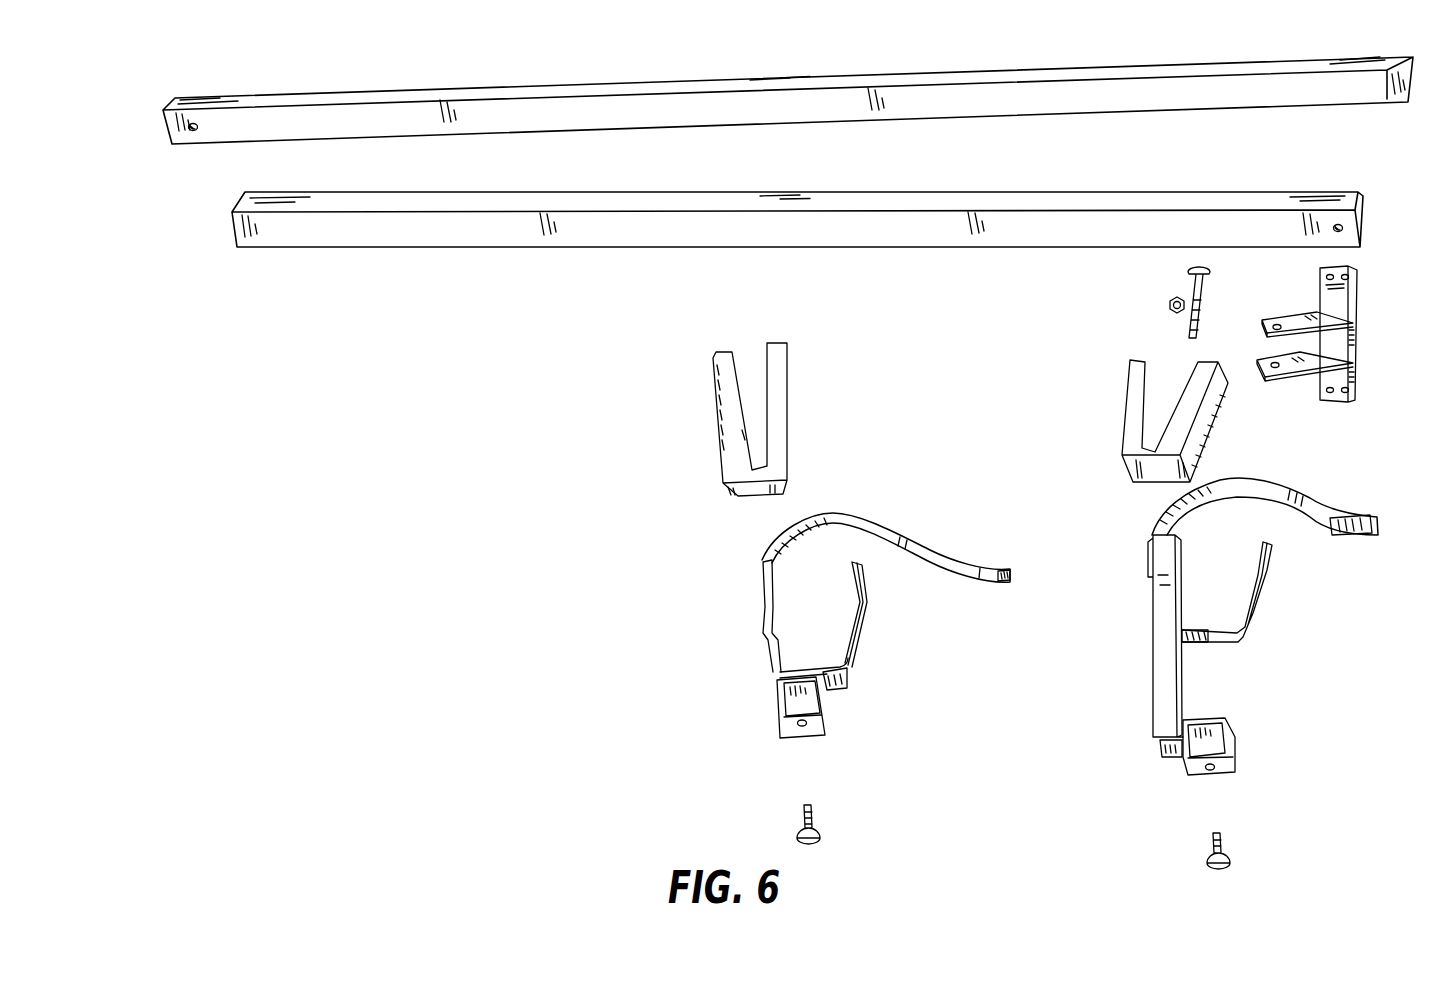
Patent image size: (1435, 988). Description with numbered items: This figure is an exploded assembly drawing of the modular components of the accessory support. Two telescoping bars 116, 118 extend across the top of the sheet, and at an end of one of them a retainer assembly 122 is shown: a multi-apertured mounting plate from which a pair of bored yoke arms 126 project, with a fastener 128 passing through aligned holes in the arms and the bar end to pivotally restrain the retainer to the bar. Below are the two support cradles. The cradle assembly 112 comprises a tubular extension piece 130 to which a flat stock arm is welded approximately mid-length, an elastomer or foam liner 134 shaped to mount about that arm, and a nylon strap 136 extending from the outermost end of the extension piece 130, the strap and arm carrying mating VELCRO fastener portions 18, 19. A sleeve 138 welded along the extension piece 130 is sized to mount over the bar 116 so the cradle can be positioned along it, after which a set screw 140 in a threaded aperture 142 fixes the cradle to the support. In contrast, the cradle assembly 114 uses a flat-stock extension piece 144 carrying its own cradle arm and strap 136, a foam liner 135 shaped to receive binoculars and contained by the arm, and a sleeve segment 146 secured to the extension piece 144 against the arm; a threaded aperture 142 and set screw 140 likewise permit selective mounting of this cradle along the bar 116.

The bar 118 is at (673, 83).
The bar 116 is at (715, 200).
The fastener 128 is at (1205, 280).
The retainer assembly 122 is at (1357, 297).
The yoke arms 126 is at (1275, 355).
The liner 134 is at (1125, 414).
The foam liner 135 is at (782, 415).
The strap 136 is at (932, 543).
The fastener portion 19 is at (1012, 585).
The cradle assembly 114 is at (811, 659).
The extension piece 144 is at (770, 647).
The sleeve segment 146 is at (825, 722).
The fastener portion 18 is at (845, 683).
The threaded aperture 142 is at (800, 730).
The set screw 140 is at (812, 817).
The cradle assembly 112 is at (1195, 655).
The extension piece 130 is at (1168, 662).
The sleeve 138 is at (1237, 743).